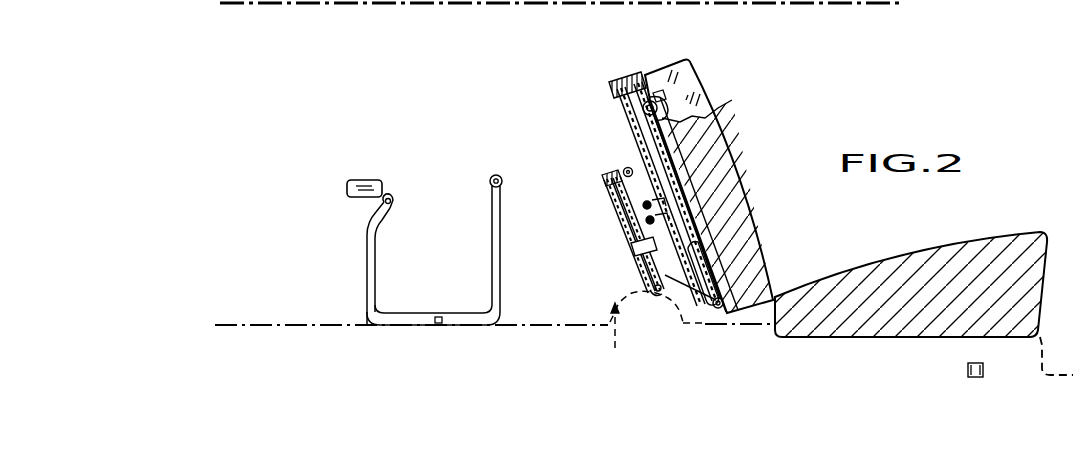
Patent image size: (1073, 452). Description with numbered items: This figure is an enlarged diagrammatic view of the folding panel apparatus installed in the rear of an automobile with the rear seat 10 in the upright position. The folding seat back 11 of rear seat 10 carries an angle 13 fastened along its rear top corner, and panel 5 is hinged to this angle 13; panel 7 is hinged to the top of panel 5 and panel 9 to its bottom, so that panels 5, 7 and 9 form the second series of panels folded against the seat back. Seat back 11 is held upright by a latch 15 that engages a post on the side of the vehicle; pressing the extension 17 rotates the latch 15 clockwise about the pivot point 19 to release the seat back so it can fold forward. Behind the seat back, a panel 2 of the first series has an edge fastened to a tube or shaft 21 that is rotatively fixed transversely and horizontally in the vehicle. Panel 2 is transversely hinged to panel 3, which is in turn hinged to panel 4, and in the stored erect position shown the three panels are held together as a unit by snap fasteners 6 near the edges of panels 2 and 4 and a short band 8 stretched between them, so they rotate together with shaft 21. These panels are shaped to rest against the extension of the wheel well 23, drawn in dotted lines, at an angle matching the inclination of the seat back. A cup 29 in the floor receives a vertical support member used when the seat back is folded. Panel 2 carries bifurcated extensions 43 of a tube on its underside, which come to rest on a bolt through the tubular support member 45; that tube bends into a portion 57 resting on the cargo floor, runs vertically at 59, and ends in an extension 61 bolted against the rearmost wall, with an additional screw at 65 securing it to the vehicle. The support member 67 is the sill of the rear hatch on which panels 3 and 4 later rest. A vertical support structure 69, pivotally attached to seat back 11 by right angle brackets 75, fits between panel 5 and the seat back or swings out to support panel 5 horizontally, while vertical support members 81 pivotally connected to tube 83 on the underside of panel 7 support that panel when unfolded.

The panel 2 is at (668, 299).
The panel 3 is at (612, 190).
The panel 4 is at (620, 215).
The panel 5 is at (622, 84).
The snap fasteners 6 is at (632, 254).
The panel 7 is at (609, 88).
The band 8 is at (635, 262).
The panel 9 is at (688, 318).
The rear seat 10 is at (897, 258).
The seat back 11 is at (720, 133).
The angle 13 is at (639, 78).
The latch 15 is at (660, 104).
The extension 17 is at (643, 106).
The pivot point 19 is at (658, 93).
The shaft 21 is at (615, 174).
The wheel well 23 is at (612, 340).
The cup 29 is at (967, 370).
The bifurcated extensions 43 is at (713, 267).
The tubular support member 45 is at (492, 225).
The portion 57 is at (412, 327).
The vertical portion 59 is at (367, 267).
The extension 61 is at (382, 217).
The bolt or sheet metal screw 65 is at (437, 347).
The support member 67 is at (362, 183).
The vertical support structure 69 is at (721, 306).
The right angle bracket 75 is at (716, 307).
The vertical support members 81 is at (652, 204).
The tube 83 is at (656, 219).